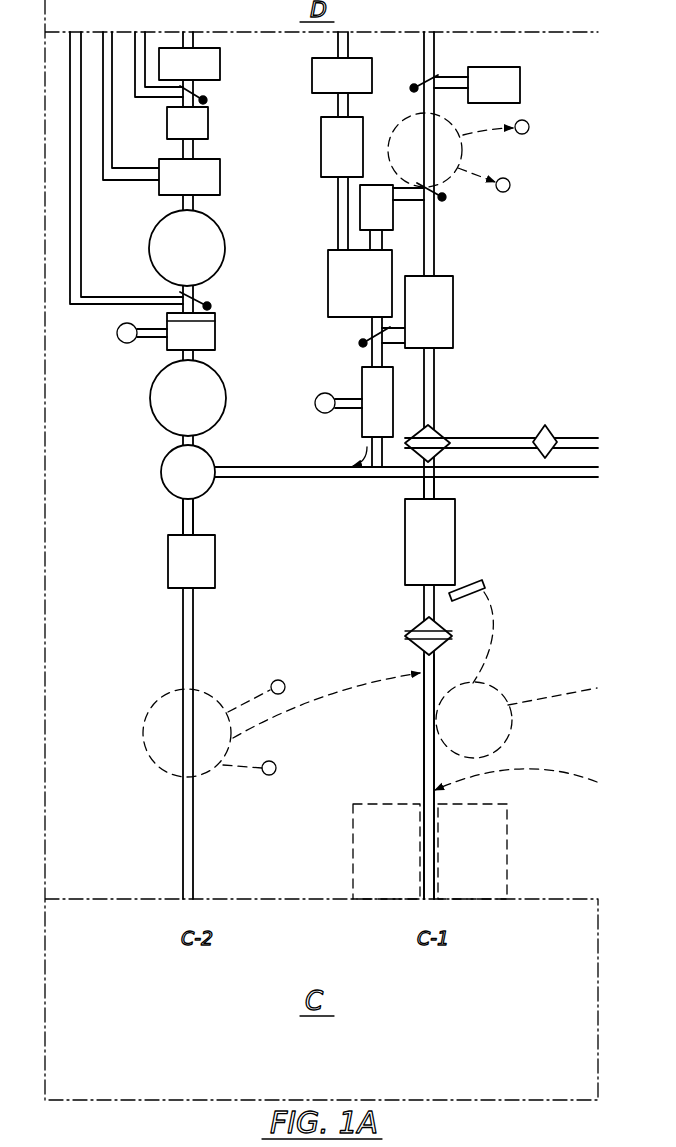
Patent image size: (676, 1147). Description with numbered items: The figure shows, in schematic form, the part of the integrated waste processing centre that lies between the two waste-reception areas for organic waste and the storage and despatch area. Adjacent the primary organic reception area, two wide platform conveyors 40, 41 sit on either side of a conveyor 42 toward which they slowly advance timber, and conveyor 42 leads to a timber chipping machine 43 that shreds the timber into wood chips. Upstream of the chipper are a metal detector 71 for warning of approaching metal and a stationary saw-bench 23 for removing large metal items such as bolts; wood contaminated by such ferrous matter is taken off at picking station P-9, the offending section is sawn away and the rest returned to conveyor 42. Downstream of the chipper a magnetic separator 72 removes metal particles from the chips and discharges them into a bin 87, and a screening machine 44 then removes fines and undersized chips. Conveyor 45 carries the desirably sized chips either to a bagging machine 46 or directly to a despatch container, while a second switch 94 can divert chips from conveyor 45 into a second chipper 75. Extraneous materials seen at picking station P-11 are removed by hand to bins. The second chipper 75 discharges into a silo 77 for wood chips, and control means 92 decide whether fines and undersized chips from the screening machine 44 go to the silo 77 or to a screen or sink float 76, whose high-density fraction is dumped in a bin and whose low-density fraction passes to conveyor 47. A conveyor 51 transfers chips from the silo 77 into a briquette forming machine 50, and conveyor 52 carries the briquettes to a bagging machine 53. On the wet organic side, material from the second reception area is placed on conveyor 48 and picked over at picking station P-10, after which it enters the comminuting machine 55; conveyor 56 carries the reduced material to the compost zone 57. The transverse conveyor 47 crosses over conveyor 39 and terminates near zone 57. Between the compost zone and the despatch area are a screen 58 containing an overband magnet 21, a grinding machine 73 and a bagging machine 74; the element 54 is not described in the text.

The bagging machine 74 is at (220, 66).
The grinding machine 73 is at (208, 128).
The flow meter 54 is at (220, 176).
The overband magnet 21 is at (215, 320).
The screen 58 is at (215, 338).
The compost zone 57 is at (215, 462).
The conveyor 56 is at (202, 520).
The comminuting machine 55 is at (215, 555).
The conveyor 48 is at (193, 650).
The conveyor 47 is at (320, 477).
The bagging machine 53 is at (372, 68).
The conveyor 52 is at (348, 100).
The briquette forming machine 50 is at (321, 158).
The conveyor 51 is at (338, 222).
The silo 77 is at (328, 290).
The control means 92 is at (361, 344).
The screen or sink float 76 is at (362, 380).
The chipper 75 is at (393, 210).
The second switch 94 is at (445, 198).
The bagging machine 46 is at (520, 84).
The conveyor 45 is at (434, 246).
The screening machine 44 is at (453, 312).
The magnetic separator 72 is at (450, 430).
The bin 87 is at (547, 425).
The conveyor 39 is at (434, 488).
The timber chipping machine 43 is at (455, 538).
The stationary saw-bench 23 is at (486, 587).
The metal detector 71 is at (411, 630).
The conveyor 42 is at (424, 752).
The platform conveyor 40 is at (353, 845).
The platform conveyor 41 is at (507, 840).
The picking station P-9 is at (500, 695).
The picking station P-10 is at (145, 752).
The picking station P-11 is at (478, 138).